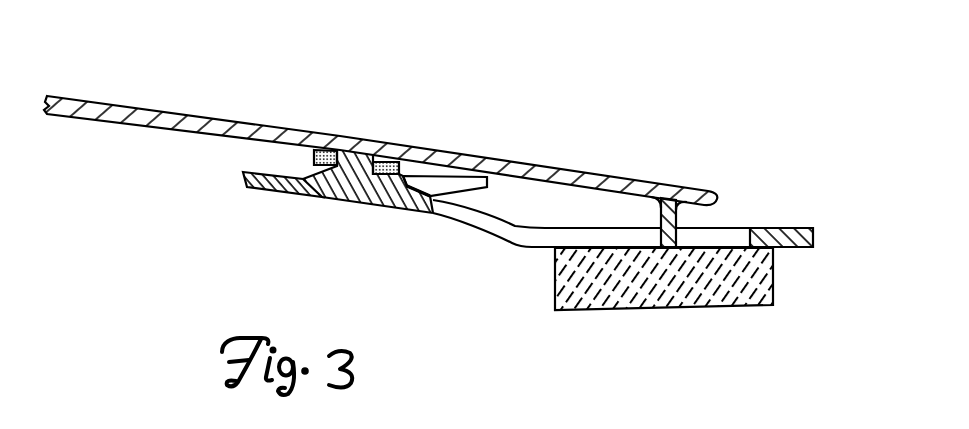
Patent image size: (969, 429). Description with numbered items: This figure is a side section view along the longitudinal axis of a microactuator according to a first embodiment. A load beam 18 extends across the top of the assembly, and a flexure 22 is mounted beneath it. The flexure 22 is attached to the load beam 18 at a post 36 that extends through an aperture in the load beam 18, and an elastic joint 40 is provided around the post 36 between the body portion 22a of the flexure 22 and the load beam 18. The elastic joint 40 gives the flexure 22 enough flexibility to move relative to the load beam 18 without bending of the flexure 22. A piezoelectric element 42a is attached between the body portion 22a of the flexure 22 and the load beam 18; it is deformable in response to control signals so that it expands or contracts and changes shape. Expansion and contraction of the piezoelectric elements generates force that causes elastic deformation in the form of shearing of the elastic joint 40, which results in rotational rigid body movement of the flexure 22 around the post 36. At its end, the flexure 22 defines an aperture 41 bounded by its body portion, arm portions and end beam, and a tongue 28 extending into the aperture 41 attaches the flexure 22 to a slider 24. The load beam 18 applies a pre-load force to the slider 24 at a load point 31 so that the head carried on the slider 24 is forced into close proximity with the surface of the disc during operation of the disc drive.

The load beam 18 is at (124, 108).
The body portion 22a is at (241, 178).
The post 36 is at (373, 153).
The elastic joint 40 is at (316, 152).
The piezoelectric element 42a is at (488, 183).
The flexure 22 is at (484, 228).
The aperture 41 is at (540, 237).
The load point 31 is at (677, 214).
The tongue 28 is at (781, 226).
The slider 24 is at (776, 266).